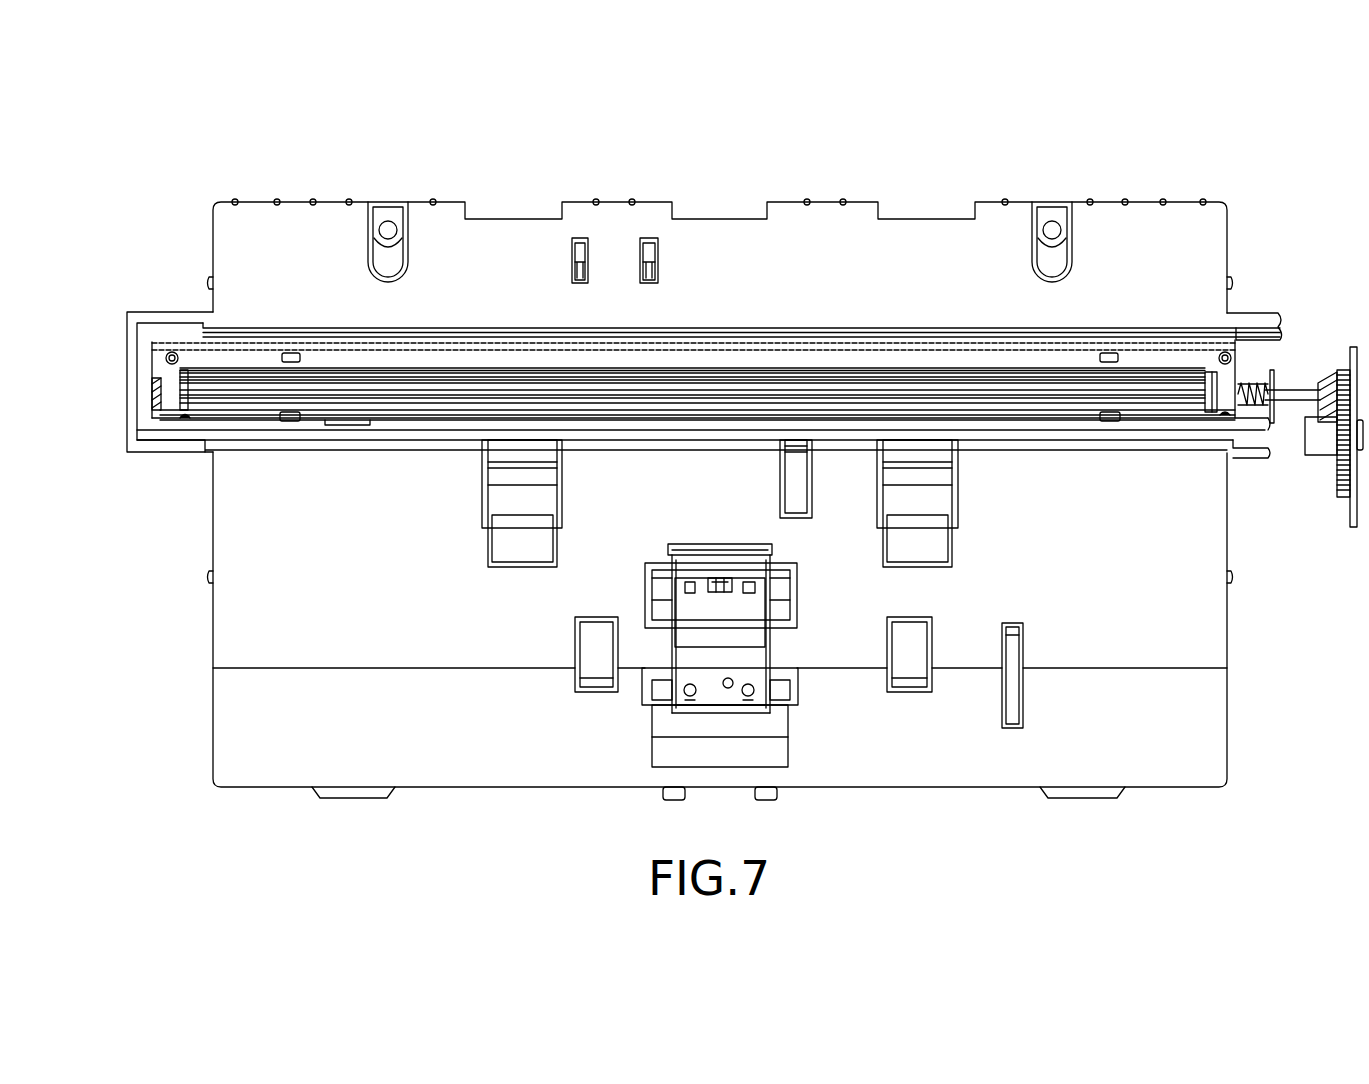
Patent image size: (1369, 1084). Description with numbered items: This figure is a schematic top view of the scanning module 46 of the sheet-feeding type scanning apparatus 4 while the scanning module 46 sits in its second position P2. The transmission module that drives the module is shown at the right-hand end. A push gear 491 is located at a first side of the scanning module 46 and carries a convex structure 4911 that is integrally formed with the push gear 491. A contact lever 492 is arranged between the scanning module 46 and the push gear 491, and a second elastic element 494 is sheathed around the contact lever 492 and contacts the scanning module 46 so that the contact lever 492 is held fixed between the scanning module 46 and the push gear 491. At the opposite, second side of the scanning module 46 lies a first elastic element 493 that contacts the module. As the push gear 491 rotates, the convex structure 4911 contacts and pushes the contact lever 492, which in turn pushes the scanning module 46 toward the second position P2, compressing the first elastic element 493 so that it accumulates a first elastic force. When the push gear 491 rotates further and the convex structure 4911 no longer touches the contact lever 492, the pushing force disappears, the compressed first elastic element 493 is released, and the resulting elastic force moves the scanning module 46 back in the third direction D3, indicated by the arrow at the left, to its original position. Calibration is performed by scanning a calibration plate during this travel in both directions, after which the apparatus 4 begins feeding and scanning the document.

The sheet-feeding type scanning apparatus 4 is at (1026, 159).
The scanning module 46 is at (423, 362).
The push gear 491 is at (1338, 472).
The convex structure 4911 is at (1320, 385).
The contact lever 492 is at (1288, 400).
The first elastic element 493 is at (166, 378).
The second elastic element 494 is at (1250, 385).
The third direction D3 is at (95, 389).
The second position P2 is at (162, 342).